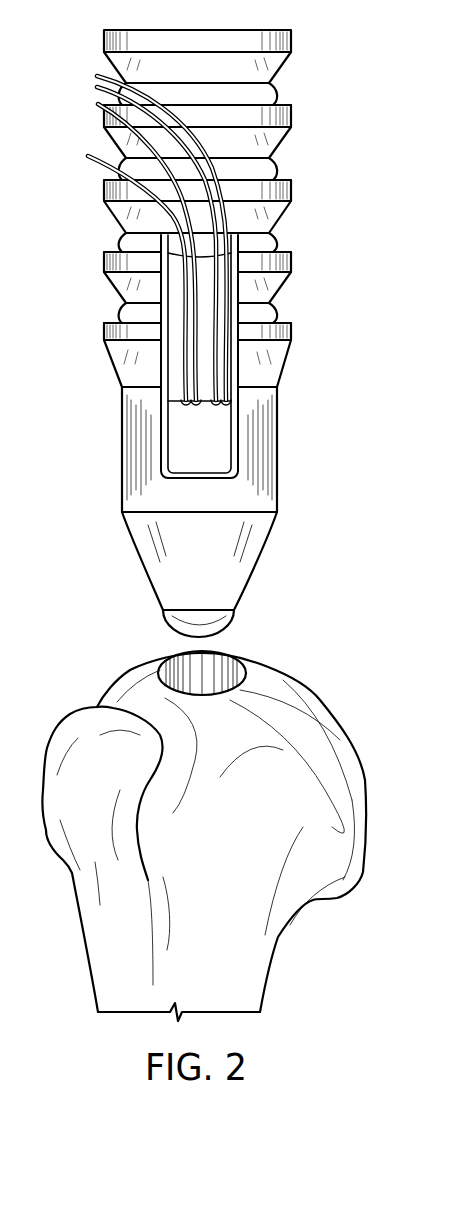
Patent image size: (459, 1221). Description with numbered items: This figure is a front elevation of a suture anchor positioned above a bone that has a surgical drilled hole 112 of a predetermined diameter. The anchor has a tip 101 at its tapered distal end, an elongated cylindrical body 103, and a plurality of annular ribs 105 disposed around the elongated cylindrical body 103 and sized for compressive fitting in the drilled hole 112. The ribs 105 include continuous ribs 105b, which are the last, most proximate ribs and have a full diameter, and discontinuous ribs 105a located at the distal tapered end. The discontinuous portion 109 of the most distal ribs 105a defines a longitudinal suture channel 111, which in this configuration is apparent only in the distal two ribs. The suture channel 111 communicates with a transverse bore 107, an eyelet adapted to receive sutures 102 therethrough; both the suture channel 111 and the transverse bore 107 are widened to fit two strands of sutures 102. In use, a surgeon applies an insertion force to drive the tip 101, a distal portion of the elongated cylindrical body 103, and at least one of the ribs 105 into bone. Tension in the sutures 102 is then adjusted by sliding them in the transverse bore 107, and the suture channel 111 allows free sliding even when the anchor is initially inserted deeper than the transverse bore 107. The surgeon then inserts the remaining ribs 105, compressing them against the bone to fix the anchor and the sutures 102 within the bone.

The tip 101 is at (139, 547).
The sutures 102 is at (103, 130).
The elongated cylindrical body 103 is at (142, 473).
The ribs 105 is at (289, 254).
The discontinuous ribs 105a is at (292, 328).
The continuous ribs 105b is at (292, 112).
The transverse bore 107 is at (224, 457).
The discontinuities 109 is at (165, 333).
The longitudinal channel 111 is at (176, 293).
The drilled hole 112 is at (188, 663).